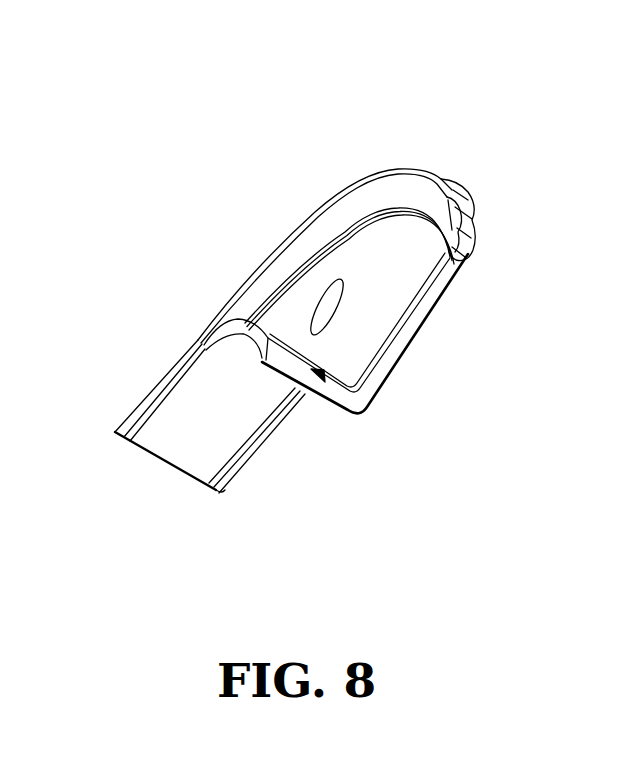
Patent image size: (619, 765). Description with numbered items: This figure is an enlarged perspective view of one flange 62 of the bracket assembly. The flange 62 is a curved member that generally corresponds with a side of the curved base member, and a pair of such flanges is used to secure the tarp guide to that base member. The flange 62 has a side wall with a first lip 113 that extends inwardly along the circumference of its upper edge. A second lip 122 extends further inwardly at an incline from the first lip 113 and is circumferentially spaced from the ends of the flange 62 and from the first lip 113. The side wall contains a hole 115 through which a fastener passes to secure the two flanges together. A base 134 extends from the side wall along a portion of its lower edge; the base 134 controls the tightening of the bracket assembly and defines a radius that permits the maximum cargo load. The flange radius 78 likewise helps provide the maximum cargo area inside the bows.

The second lip 122 is at (413, 167).
The first lip 113 is at (463, 258).
The flange 62 is at (410, 293).
The hole 115 is at (326, 306).
The base 134 is at (347, 410).
The flange radius 78 is at (280, 427).